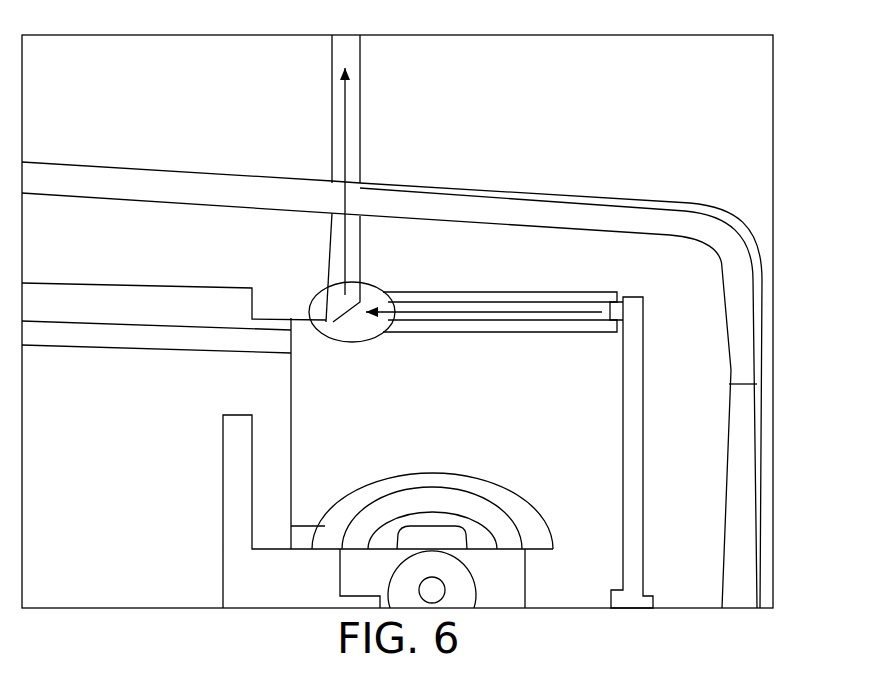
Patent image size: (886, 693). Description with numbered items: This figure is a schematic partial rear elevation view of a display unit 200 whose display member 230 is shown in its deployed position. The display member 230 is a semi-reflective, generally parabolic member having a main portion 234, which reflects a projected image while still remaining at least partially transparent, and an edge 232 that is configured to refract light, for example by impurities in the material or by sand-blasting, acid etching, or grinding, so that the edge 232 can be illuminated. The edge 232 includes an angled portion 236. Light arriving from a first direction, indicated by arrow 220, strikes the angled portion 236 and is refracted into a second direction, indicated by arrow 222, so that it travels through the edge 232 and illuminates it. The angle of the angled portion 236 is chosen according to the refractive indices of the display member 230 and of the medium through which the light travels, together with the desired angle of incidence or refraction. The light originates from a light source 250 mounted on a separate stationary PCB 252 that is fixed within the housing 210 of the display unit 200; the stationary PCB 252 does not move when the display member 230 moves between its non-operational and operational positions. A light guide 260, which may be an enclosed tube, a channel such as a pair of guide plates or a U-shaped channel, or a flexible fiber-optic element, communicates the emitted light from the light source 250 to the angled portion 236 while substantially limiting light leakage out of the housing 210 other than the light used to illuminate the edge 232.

The display unit 200 is at (632, 107).
The housing 210 is at (757, 393).
The arrow indicating first direction 220 is at (452, 312).
The arrow indicating second direction 222 is at (362, 176).
The display member 230 is at (388, 83).
The edge 232 is at (361, 138).
The main portion 234 is at (174, 106).
The angled portion 236 is at (345, 326).
The light source 250 is at (619, 305).
The stationary PCB 252 is at (631, 398).
The light guide 260 is at (489, 290).